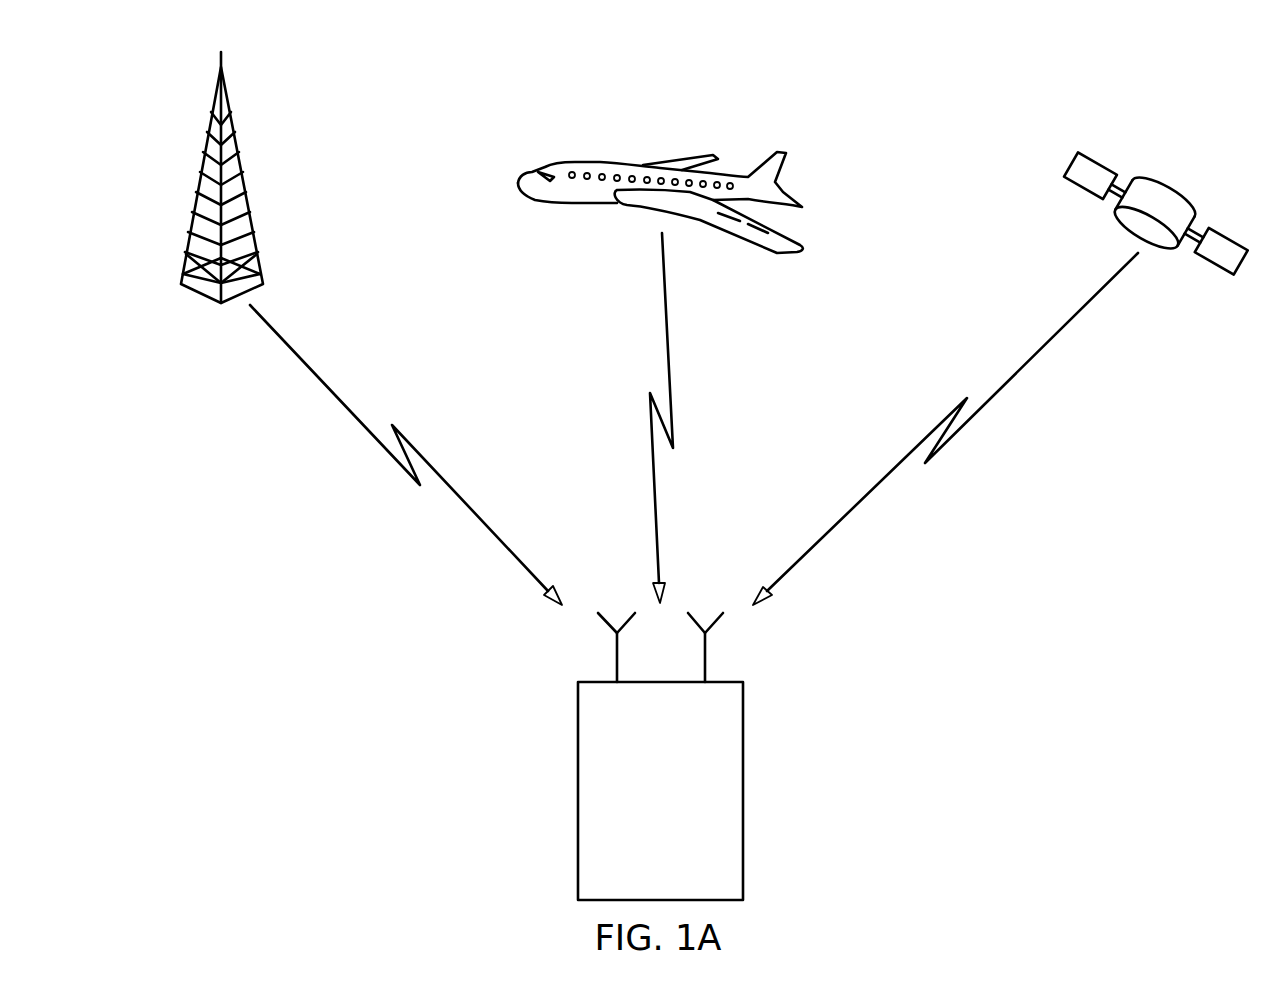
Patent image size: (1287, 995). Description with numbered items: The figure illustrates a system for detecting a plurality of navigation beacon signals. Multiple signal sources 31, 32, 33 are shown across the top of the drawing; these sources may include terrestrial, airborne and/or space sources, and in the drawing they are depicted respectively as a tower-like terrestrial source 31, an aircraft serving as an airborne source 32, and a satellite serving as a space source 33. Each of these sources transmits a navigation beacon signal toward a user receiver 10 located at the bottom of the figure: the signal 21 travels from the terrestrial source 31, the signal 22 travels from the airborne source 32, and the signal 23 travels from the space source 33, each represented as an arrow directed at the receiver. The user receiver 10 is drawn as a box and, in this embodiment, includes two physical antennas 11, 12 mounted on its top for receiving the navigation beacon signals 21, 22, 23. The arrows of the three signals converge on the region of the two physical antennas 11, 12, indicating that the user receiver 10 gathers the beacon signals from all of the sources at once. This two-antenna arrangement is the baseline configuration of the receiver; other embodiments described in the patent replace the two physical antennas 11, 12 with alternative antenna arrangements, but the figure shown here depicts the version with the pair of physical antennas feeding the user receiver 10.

The user receiver 10 is at (745, 755).
The physical antenna 11 is at (614, 653).
The physical antenna 12 is at (707, 654).
The navigation beacon signal 21 is at (318, 372).
The navigation beacon signal 22 is at (669, 342).
The navigation beacon signal 23 is at (1047, 343).
The signal source 31 is at (205, 154).
The signal source 32 is at (597, 162).
The signal source 33 is at (1175, 190).